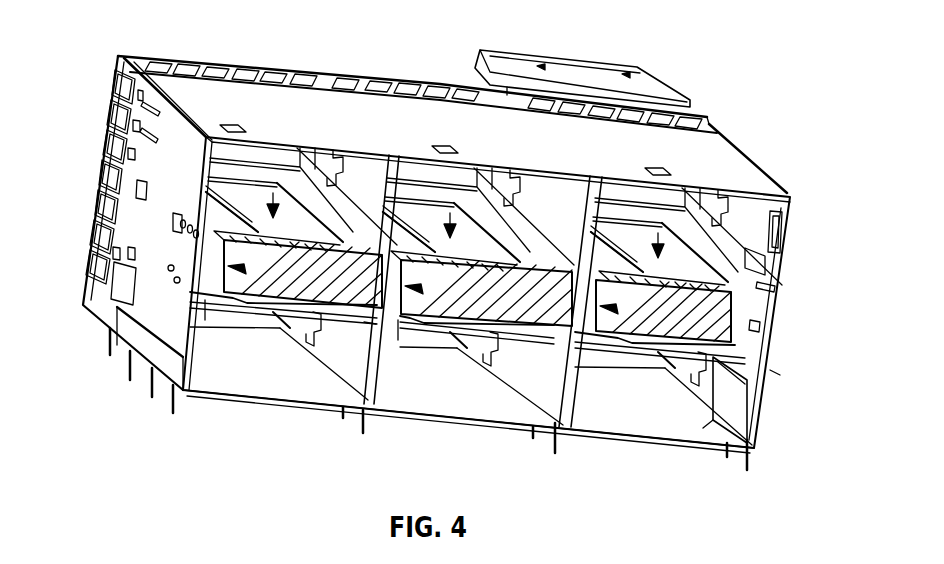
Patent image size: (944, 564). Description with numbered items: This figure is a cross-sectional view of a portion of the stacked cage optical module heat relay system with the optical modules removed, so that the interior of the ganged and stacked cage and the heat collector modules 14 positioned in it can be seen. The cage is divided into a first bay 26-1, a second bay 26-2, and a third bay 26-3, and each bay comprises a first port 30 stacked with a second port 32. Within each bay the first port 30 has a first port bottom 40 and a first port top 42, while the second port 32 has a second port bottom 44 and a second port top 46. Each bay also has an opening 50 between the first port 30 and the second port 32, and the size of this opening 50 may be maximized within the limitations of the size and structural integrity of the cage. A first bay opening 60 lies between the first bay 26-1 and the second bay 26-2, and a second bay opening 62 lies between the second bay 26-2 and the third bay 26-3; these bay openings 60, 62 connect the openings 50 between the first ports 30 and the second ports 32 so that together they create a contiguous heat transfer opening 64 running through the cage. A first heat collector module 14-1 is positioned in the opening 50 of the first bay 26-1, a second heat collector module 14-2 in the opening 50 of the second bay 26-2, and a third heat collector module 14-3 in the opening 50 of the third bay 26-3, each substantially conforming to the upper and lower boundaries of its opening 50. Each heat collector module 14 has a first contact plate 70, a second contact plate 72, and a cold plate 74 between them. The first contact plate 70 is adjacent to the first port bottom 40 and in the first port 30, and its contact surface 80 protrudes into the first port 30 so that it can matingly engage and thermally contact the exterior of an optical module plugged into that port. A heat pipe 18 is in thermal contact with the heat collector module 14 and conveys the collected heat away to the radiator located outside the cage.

The heat collector module 14 is at (232, 262).
The first heat collector module 14-1 is at (658, 370).
The second heat collector module 14-2 is at (470, 348).
The third heat collector module 14-3 is at (281, 335).
The heat pipe 18 is at (600, 315).
The first bay 26-1 is at (737, 192).
The second bay 26-2 is at (423, 152).
The third bay 26-3 is at (258, 133).
The first port 30 is at (782, 240).
The second port 32 is at (750, 402).
The first port bottom 40 is at (278, 207).
The first port top 42 is at (271, 150).
The second port bottom 44 is at (243, 375).
The second port top 46 is at (216, 310).
The opening 50 is at (510, 285).
The first bay opening 60 is at (370, 328).
The second bay opening 62 is at (499, 340).
The contiguous heat transfer opening 64 is at (770, 306).
The first contact plate 70 is at (318, 232).
The second contact plate 72 is at (248, 318).
The cold plate 74 is at (212, 290).
The contact surface 80 is at (334, 172).